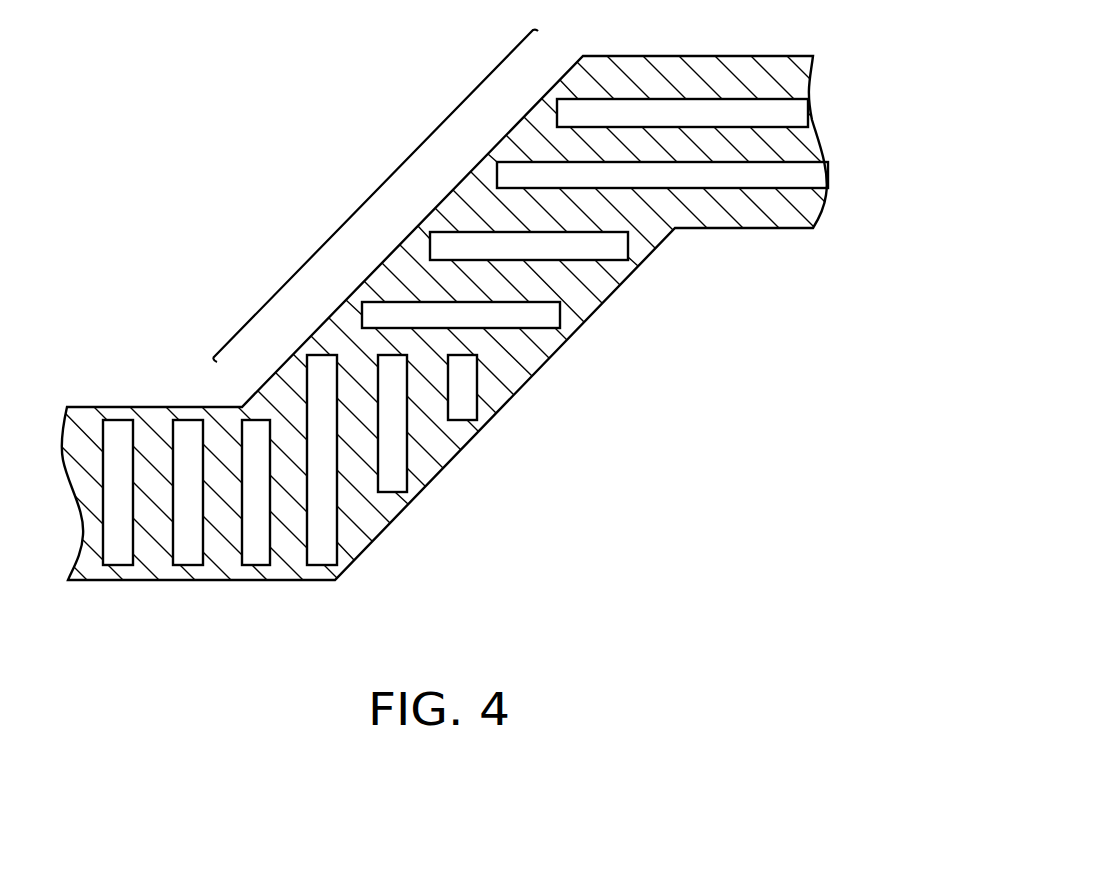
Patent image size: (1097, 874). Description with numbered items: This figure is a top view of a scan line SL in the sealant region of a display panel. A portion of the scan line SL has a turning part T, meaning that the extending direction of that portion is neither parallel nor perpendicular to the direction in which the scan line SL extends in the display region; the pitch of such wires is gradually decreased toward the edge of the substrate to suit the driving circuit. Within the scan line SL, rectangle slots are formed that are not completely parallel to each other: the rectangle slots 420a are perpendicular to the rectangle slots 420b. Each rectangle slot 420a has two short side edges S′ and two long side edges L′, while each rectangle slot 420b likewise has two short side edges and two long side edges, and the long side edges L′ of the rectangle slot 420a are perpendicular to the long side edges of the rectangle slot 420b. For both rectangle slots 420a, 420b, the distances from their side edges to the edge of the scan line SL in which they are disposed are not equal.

The scan line SL is at (148, 420).
The turning part T is at (357, 205).
The short side edge S′ is at (430, 246).
The long side edge L′ is at (453, 262).
The rectangle slot 420a is at (608, 250).
The rectangle slot 420b is at (402, 427).